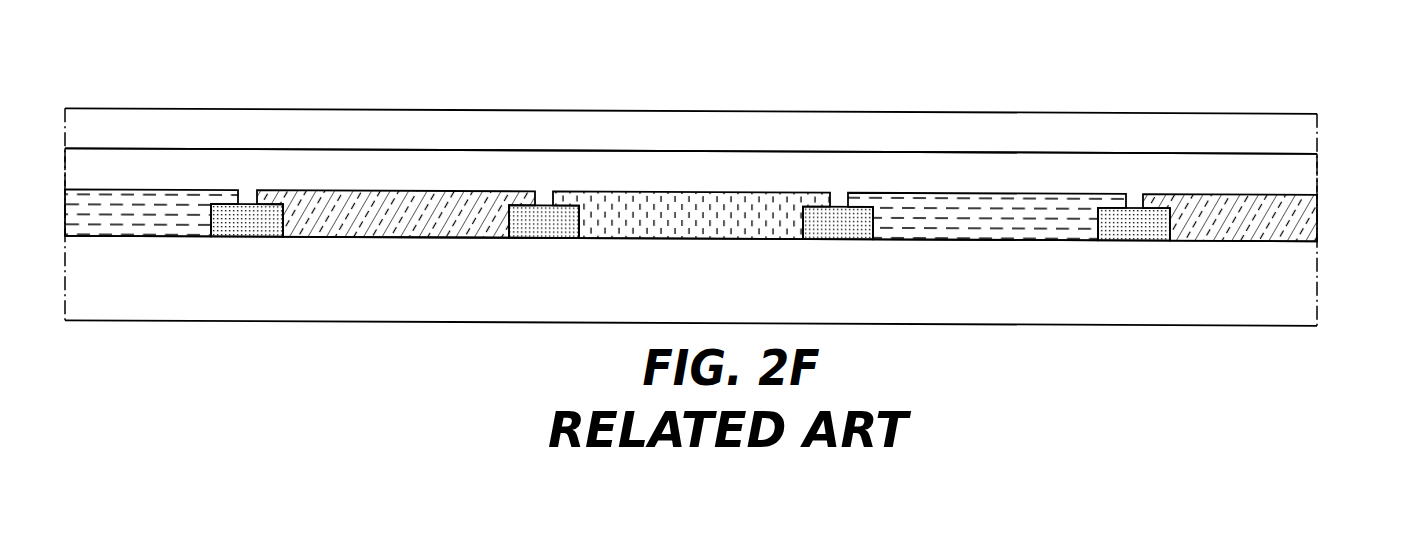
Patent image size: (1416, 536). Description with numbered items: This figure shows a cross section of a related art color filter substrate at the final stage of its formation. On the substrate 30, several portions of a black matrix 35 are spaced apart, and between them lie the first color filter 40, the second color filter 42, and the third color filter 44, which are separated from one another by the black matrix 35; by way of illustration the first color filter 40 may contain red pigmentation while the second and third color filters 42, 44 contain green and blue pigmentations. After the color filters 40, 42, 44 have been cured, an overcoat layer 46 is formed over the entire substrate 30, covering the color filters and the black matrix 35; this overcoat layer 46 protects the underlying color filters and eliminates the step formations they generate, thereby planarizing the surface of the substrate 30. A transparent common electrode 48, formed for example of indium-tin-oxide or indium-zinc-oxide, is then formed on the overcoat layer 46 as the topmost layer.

The substrate 30 is at (678, 290).
The black matrix 35 is at (1137, 242).
The first color filter 40 is at (412, 208).
The second color filter 42 is at (696, 207).
The third color filter 44 is at (162, 205).
The overcoat layer 46 is at (1305, 177).
The transparent common electrode 48 is at (1305, 133).